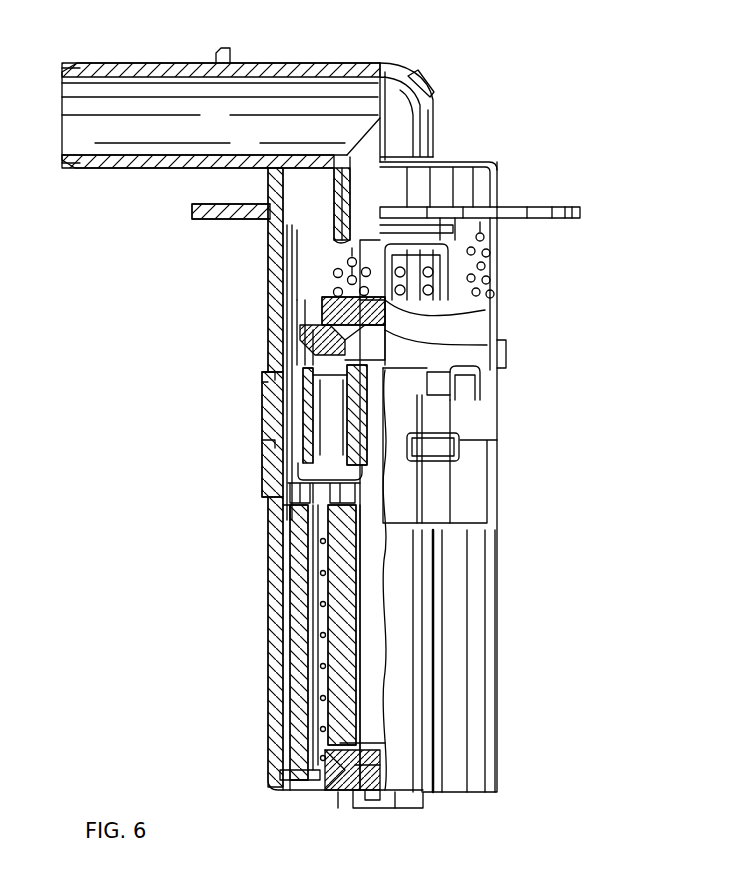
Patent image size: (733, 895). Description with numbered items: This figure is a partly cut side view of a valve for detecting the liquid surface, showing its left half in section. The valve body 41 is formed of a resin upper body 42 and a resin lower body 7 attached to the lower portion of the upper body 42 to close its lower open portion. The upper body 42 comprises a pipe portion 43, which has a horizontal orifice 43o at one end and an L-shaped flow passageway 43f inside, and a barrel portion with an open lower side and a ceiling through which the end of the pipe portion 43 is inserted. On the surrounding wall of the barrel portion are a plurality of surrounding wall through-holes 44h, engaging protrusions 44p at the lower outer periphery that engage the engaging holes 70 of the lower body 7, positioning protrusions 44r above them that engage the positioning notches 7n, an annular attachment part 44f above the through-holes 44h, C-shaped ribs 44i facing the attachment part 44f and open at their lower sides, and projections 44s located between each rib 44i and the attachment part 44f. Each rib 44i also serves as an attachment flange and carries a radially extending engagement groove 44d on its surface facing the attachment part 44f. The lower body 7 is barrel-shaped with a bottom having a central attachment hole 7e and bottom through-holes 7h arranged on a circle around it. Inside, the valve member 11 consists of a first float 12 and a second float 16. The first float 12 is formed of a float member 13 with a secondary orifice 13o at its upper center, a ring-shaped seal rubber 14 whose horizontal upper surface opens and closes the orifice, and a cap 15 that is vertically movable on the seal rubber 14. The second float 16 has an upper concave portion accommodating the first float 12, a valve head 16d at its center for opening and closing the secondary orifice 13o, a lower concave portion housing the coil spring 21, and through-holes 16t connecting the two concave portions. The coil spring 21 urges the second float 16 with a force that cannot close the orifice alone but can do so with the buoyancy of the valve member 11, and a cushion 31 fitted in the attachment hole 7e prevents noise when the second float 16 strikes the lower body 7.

The valve body 41 is at (428, 58).
The upper body 42 is at (437, 100).
The pipe portion 43 is at (309, 68).
The L-shaped flow passageway 43f is at (133, 92).
The horizontal orifice 43o is at (334, 250).
The engagement groove 44d is at (387, 240).
The projection 44s is at (447, 240).
The attachment part 44f is at (190, 212).
The rib 44i is at (486, 236).
The surrounding wall through-hole 44h is at (330, 268).
The positioning protrusion 44r is at (268, 382).
The engaging protrusion 44p is at (265, 445).
The seal rubber 14 is at (328, 298).
The cap 15 is at (300, 330).
The valve member 11 is at (283, 340).
The first float 12 is at (295, 405).
The float member 13 is at (317, 477).
The secondary orifice 13o is at (390, 322).
The second float 16 is at (300, 605).
The valve head 16d is at (387, 350).
The through-hole 16t is at (270, 507).
The coil spring 21 is at (320, 698).
The lower body 7 is at (494, 513).
The positioning notch 7n is at (452, 410).
The bottom through-hole 7h is at (297, 787).
The attachment hole 7e is at (388, 788).
The engaging hole 70 is at (460, 458).
The cushion 31 is at (345, 785).